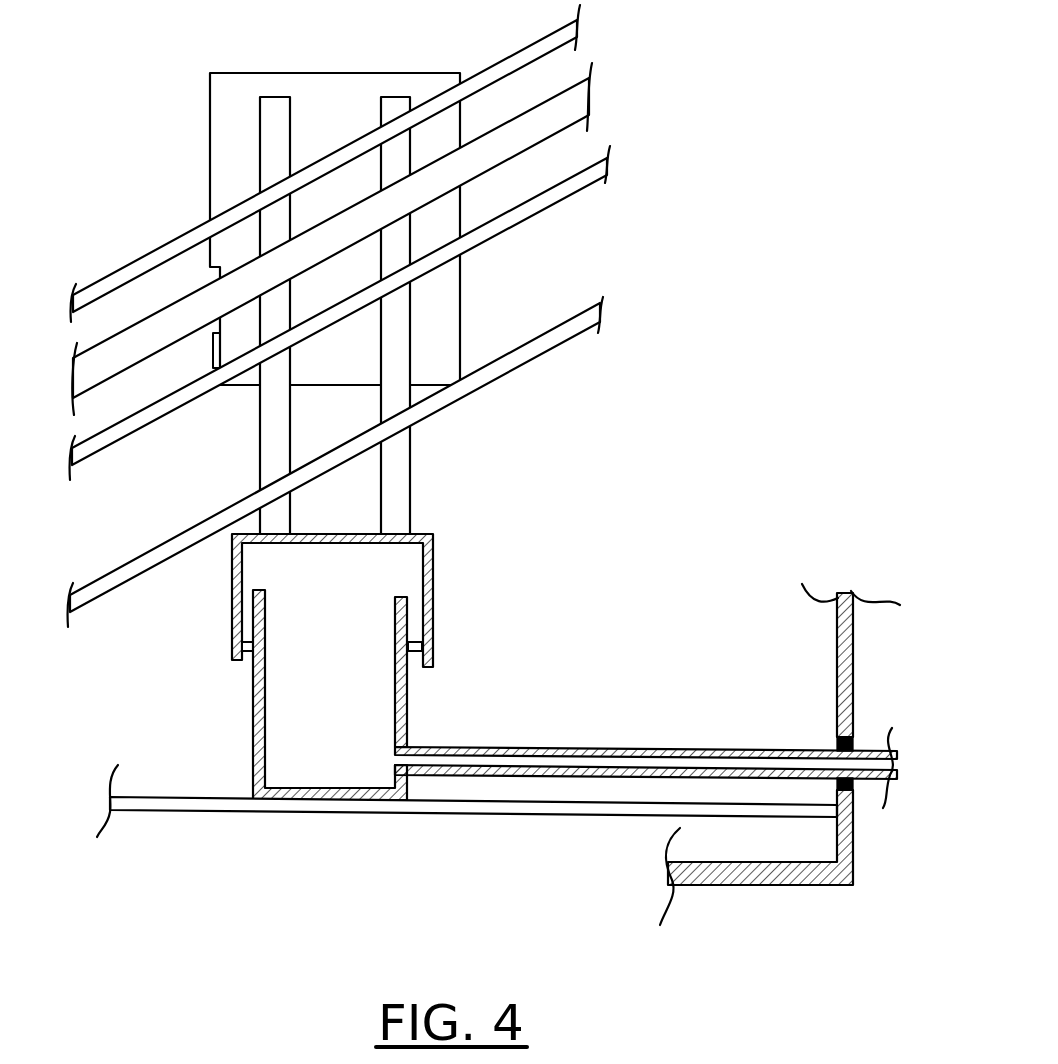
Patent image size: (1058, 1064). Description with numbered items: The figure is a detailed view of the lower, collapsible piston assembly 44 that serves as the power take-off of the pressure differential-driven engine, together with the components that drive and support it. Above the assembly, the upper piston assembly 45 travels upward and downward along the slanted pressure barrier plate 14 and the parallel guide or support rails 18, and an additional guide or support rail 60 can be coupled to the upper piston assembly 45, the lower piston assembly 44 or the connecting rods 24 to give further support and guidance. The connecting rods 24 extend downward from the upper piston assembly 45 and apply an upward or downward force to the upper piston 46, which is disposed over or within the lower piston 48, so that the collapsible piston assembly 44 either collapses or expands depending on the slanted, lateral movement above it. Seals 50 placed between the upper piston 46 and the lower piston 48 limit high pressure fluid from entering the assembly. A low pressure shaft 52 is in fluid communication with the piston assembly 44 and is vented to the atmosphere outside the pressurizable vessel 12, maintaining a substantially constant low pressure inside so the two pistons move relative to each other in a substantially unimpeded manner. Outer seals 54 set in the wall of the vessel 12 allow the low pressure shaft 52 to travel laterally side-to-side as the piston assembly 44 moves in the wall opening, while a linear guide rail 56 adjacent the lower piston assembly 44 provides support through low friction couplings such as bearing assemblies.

The pressurizable enclosure or vessel 12 is at (857, 625).
The pressure barrier plate 14 is at (592, 95).
The guide or support rails 18 is at (580, 28).
The connecting rods 24 is at (410, 468).
The lower, collapsible piston assembly 44 is at (518, 615).
The upper piston assembly 45 is at (148, 155).
The upper piston 46 is at (435, 562).
The lower piston 48 is at (250, 715).
The seals 50 is at (247, 655).
The low pressure shaft 52 is at (547, 747).
The outer seals 54 is at (833, 743).
The linear guide rail 56 is at (563, 815).
The additional guide or support rail 60 is at (602, 310).